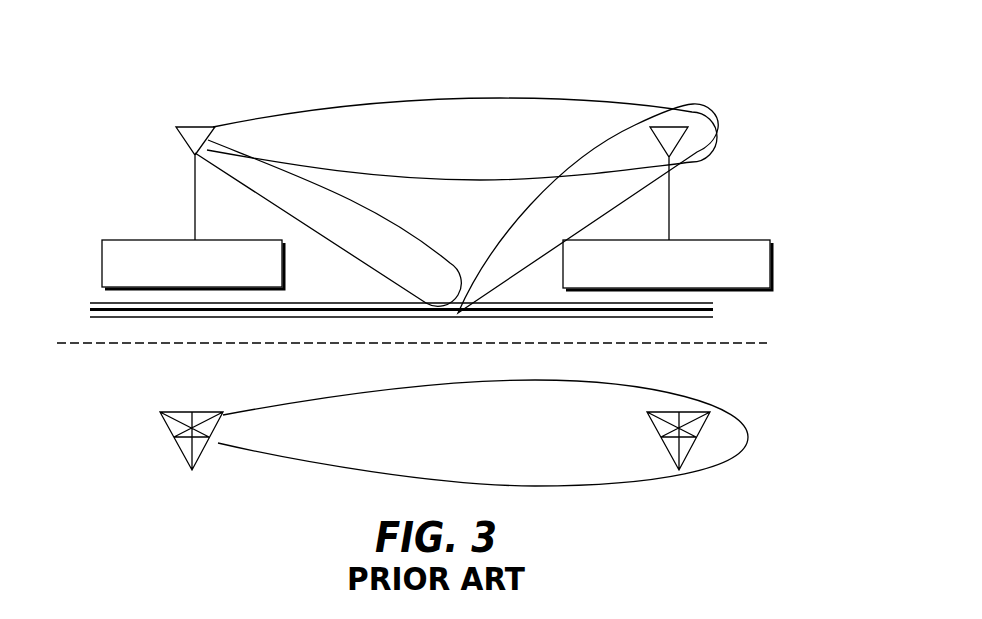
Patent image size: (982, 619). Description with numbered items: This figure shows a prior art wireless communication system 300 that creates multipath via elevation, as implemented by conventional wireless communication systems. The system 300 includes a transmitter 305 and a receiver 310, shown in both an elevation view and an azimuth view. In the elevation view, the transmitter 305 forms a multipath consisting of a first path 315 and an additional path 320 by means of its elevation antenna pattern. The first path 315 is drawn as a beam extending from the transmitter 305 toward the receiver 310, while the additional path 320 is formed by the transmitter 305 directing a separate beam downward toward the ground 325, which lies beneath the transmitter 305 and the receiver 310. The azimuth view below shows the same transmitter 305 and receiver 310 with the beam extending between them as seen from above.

The prior art wireless communication system 300 is at (81, 49).
The transmitter 305 is at (130, 240).
The receiver 310 is at (723, 240).
The first path 315 is at (467, 98).
The additional path 320 is at (404, 221).
The ground 325 is at (713, 309).